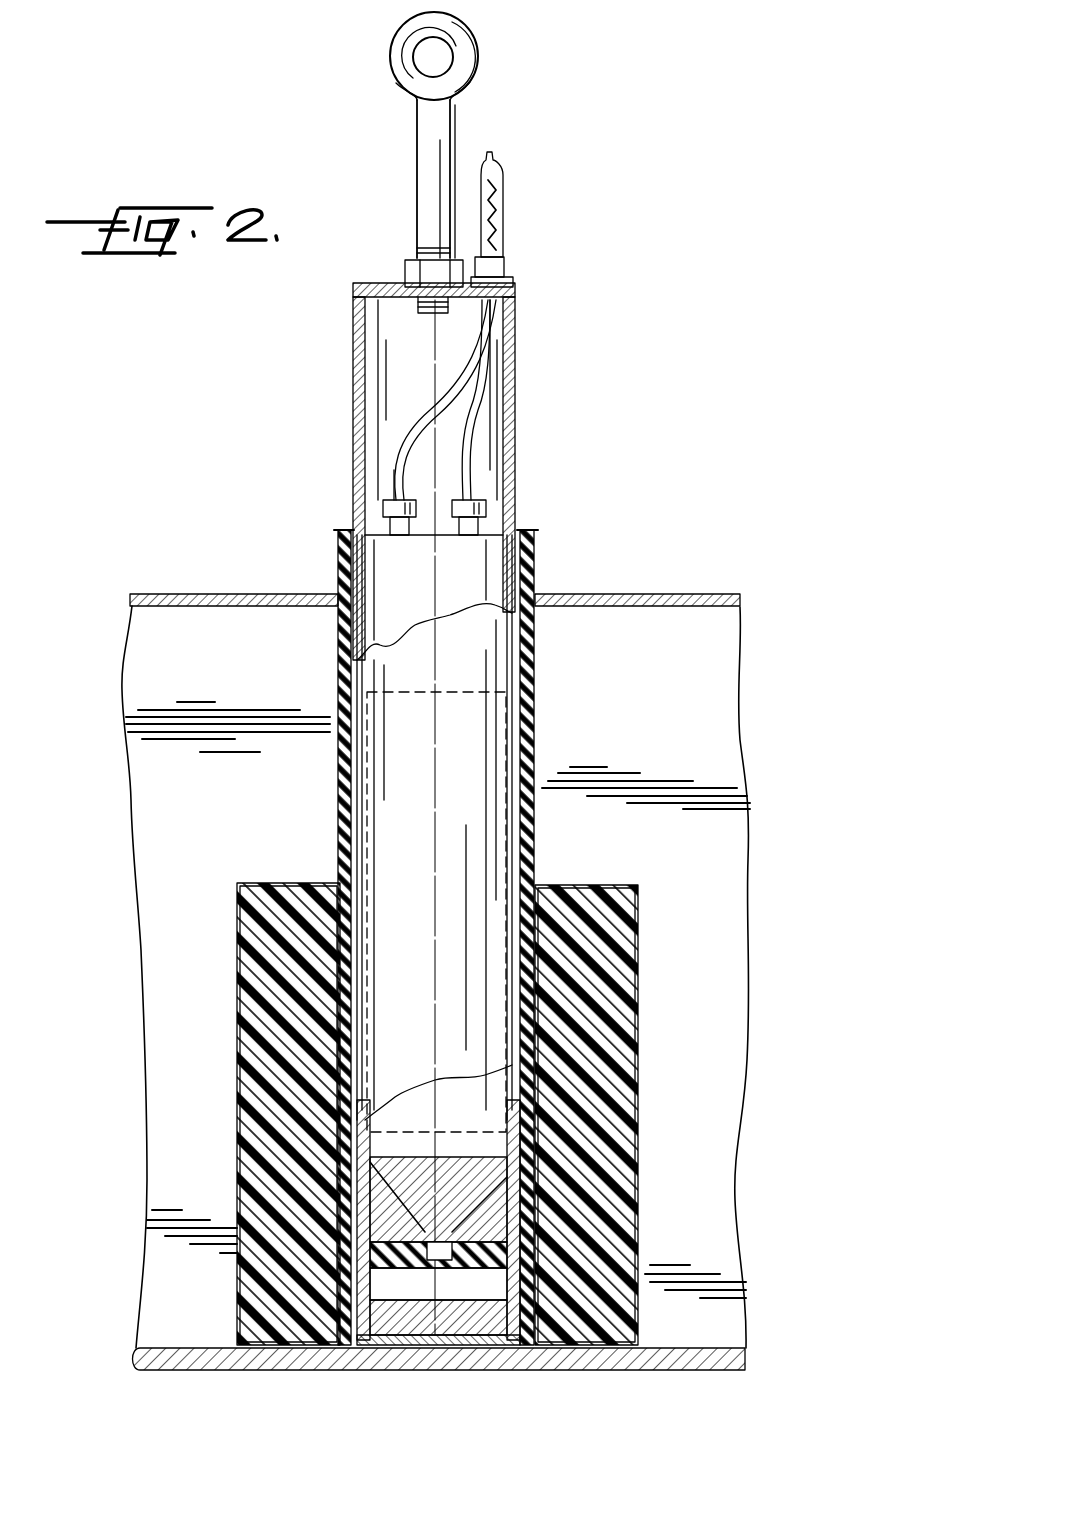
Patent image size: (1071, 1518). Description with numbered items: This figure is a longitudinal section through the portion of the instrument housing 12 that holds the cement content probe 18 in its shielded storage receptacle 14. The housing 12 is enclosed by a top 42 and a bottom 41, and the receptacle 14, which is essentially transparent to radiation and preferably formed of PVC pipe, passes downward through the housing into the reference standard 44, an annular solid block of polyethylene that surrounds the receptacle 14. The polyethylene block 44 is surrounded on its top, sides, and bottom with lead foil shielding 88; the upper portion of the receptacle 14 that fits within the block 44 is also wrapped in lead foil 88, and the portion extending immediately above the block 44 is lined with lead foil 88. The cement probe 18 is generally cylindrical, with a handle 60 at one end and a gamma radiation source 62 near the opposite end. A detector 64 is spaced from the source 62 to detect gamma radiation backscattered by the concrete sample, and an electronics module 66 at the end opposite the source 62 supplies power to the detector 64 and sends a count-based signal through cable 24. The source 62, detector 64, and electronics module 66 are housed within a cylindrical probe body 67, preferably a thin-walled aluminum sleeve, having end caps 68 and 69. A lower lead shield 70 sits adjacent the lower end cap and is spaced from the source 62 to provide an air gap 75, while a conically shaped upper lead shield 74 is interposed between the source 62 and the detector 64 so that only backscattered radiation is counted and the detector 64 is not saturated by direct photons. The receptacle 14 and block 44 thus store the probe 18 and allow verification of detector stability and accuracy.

The instrument housing 12 is at (768, 766).
The shielded storage receptacle 14 is at (348, 528).
The cement content probe 18 is at (474, 432).
The cable 24 is at (505, 205).
The bottom 41 is at (748, 1356).
The top 42 is at (680, 600).
The reference standard 44 is at (590, 900).
The handle 60 is at (437, 125).
The gamma radiation source 62 is at (510, 1252).
The detector 64 is at (460, 1129).
The electronics module 66 is at (460, 672).
The cylindrical probe body 67 is at (508, 472).
The end cap 68 is at (370, 285).
The end cap 69 is at (405, 1330).
The lower lead shield 70 is at (478, 1340).
The upper lead shield 74 is at (480, 1185).
The air gap 75 is at (438, 1286).
The lead foil shielding 88 is at (340, 740).